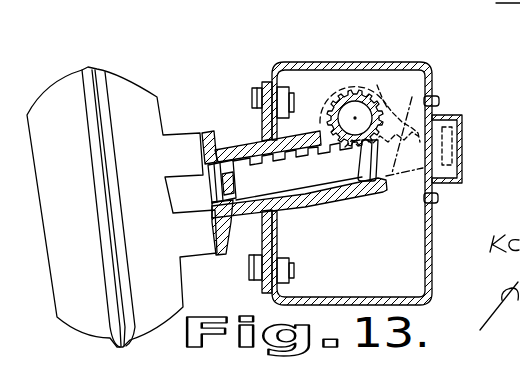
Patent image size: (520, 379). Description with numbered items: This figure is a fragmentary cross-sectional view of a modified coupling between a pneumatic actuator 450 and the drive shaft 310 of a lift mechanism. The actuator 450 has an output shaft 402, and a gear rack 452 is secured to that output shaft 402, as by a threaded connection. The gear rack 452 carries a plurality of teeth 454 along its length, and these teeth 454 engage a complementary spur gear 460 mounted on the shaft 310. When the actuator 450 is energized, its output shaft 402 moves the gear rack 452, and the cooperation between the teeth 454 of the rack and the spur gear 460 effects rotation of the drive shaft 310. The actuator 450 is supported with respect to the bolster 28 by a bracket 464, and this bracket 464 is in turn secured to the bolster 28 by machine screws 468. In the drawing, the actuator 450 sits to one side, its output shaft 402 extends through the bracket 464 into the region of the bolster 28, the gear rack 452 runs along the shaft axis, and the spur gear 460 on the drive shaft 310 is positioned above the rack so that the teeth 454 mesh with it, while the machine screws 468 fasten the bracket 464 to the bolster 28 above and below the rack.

The pneumatic actuator 450 is at (135, 78).
The bracket 464 is at (207, 124).
The output shaft 402 is at (196, 170).
The machine screws 468 is at (252, 86).
The bolster 28 is at (315, 61).
The gear rack 452 is at (448, 140).
The teeth 454 is at (425, 92).
The drive shaft 310 is at (363, 86).
The spur gear 460 is at (386, 90).